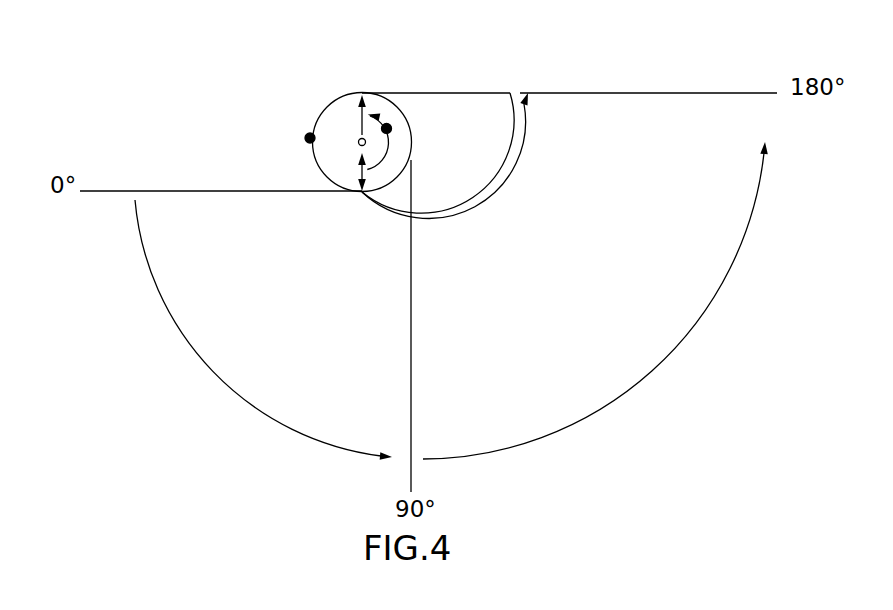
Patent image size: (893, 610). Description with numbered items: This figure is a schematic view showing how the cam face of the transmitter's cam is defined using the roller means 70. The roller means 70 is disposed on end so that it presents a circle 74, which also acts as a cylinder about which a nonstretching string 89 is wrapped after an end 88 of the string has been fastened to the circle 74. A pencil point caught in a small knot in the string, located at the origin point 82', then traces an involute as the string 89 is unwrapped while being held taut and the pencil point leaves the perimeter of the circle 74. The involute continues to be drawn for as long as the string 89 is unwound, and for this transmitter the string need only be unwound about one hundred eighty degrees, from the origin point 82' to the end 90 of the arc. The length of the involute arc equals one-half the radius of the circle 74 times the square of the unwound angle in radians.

The roller means 70 is at (324, 146).
The circle 74 is at (338, 98).
The end of string 88 is at (310, 138).
The end of the arc 90 is at (500, 93).
The nonstretching string 89 is at (233, 192).
The origin point 82' is at (357, 195).